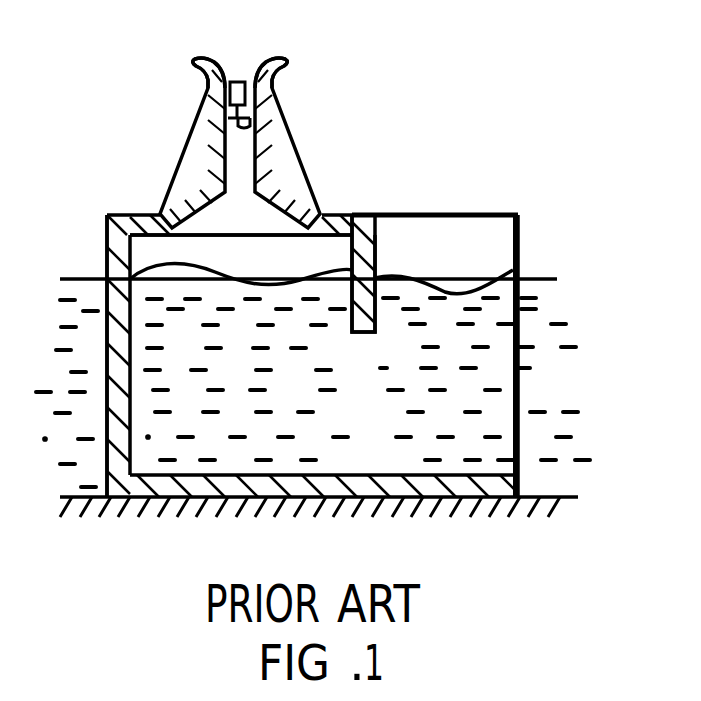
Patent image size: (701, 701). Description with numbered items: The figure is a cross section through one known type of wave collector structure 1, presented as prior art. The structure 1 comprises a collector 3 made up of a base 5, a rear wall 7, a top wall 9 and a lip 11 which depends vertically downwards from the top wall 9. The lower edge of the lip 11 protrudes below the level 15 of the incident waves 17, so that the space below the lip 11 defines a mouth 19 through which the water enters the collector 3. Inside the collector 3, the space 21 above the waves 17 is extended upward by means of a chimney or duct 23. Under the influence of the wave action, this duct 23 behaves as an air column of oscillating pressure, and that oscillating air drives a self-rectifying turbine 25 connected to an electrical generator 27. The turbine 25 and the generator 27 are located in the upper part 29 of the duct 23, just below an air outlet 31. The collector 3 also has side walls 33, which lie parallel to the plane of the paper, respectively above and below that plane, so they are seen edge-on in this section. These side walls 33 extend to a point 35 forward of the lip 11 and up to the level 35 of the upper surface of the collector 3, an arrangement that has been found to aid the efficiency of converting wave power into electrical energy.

The structure 1 is at (558, 123).
The collector 3 is at (106, 213).
The base 5 is at (123, 500).
The rear wall 7 is at (108, 260).
The top wall 9 is at (342, 213).
The lip 11 is at (373, 243).
The level 15 is at (557, 279).
The incident waves 17 is at (518, 268).
The mouth 19 is at (347, 403).
The space 21 is at (291, 228).
The chimney or duct 23 is at (208, 93).
The self-rectifying turbine 25 is at (250, 117).
The electrical generator 27 is at (240, 80).
The upper part of the duct 29 is at (209, 73).
The air outlet 31 is at (229, 63).
The side walls 33 is at (500, 452).
The point / level 35 is at (470, 214).